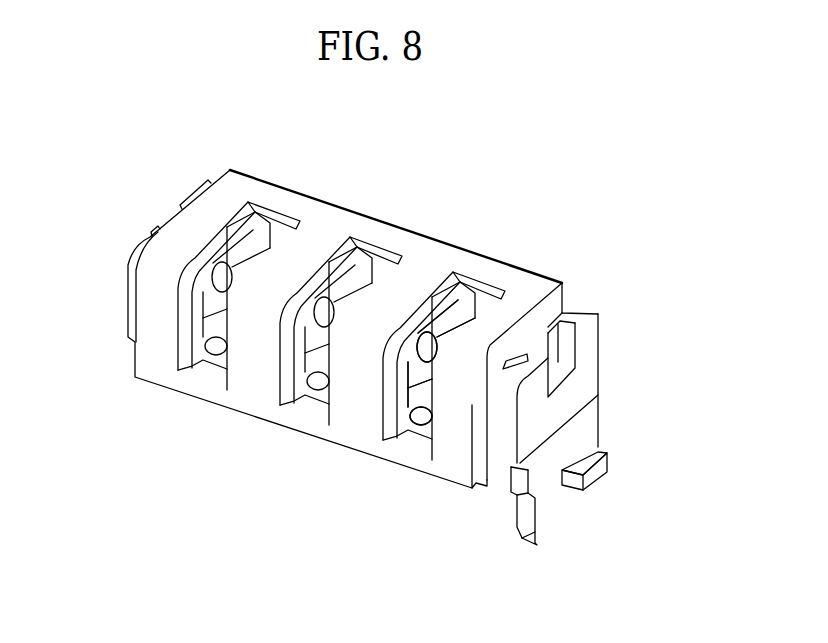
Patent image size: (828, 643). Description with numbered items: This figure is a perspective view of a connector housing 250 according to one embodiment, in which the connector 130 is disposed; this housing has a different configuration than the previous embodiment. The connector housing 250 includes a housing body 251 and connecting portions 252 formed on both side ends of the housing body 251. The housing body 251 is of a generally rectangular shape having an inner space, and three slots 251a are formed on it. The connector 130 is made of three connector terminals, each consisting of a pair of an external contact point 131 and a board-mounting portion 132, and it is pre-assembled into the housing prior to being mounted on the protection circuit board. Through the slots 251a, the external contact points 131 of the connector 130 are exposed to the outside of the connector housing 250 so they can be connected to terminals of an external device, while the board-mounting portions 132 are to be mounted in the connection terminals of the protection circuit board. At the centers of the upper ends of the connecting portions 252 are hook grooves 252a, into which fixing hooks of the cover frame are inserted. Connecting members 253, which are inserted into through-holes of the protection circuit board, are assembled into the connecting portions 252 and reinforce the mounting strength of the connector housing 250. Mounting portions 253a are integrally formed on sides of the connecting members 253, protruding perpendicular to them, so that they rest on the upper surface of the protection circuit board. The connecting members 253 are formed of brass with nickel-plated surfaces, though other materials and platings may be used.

The connector housing 250 is at (91, 117).
The housing body 251 is at (540, 284).
The slots 251a is at (470, 280).
The connecting portions 252 is at (600, 339).
The hook grooves 252a is at (528, 361).
The connecting members 253 is at (542, 523).
The mounting portions 253a is at (600, 473).
The connector 130 is at (403, 453).
The external contact points 131 is at (221, 276).
The board-mounting portions 132 is at (221, 347).